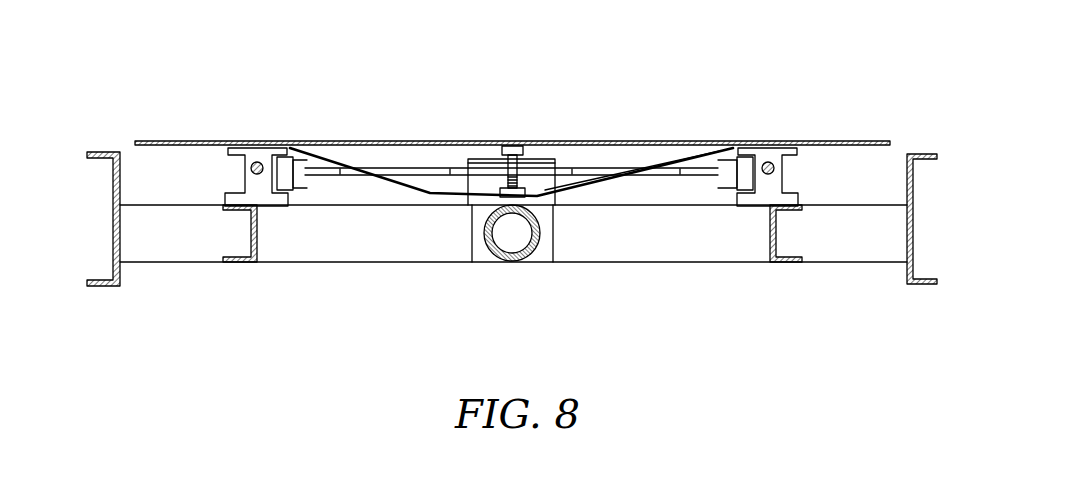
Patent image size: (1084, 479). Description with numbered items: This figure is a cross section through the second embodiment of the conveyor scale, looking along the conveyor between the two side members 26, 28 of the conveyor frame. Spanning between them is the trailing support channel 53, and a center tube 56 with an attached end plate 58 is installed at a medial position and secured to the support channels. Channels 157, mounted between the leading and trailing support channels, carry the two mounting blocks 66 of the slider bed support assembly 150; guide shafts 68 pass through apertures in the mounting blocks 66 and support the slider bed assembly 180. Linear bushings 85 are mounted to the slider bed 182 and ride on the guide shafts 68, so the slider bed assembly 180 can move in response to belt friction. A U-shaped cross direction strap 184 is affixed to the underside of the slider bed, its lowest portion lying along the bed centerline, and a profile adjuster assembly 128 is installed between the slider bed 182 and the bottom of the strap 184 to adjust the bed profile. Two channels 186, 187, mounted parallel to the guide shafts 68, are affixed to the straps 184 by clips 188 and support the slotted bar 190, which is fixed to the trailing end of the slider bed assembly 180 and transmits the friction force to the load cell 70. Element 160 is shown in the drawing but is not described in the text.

The side member 26 is at (100, 289).
The side member 28 is at (913, 285).
The trailing support channel 53 is at (153, 262).
The channel 157 is at (235, 262).
The end plate 58 is at (484, 253).
The center tube 56 is at (538, 253).
The cross direction strap 184 is at (450, 192).
The slider bed 182 is at (509, 148).
The profile adjuster assembly 128 is at (502, 165).
The load cell 70 is at (545, 160).
The guide rail 160 is at (622, 160).
The slotted bar 190 is at (688, 143).
The slider bed assembly 180 is at (717, 138).
The mounting block 66 is at (232, 192).
The linear bushing 85 is at (254, 153).
The guide shaft 68 is at (262, 165).
The slider bed support assembly 150 is at (271, 240).
The channel 187 is at (297, 192).
The clip 188 is at (306, 190).
The channel 186 is at (724, 190).